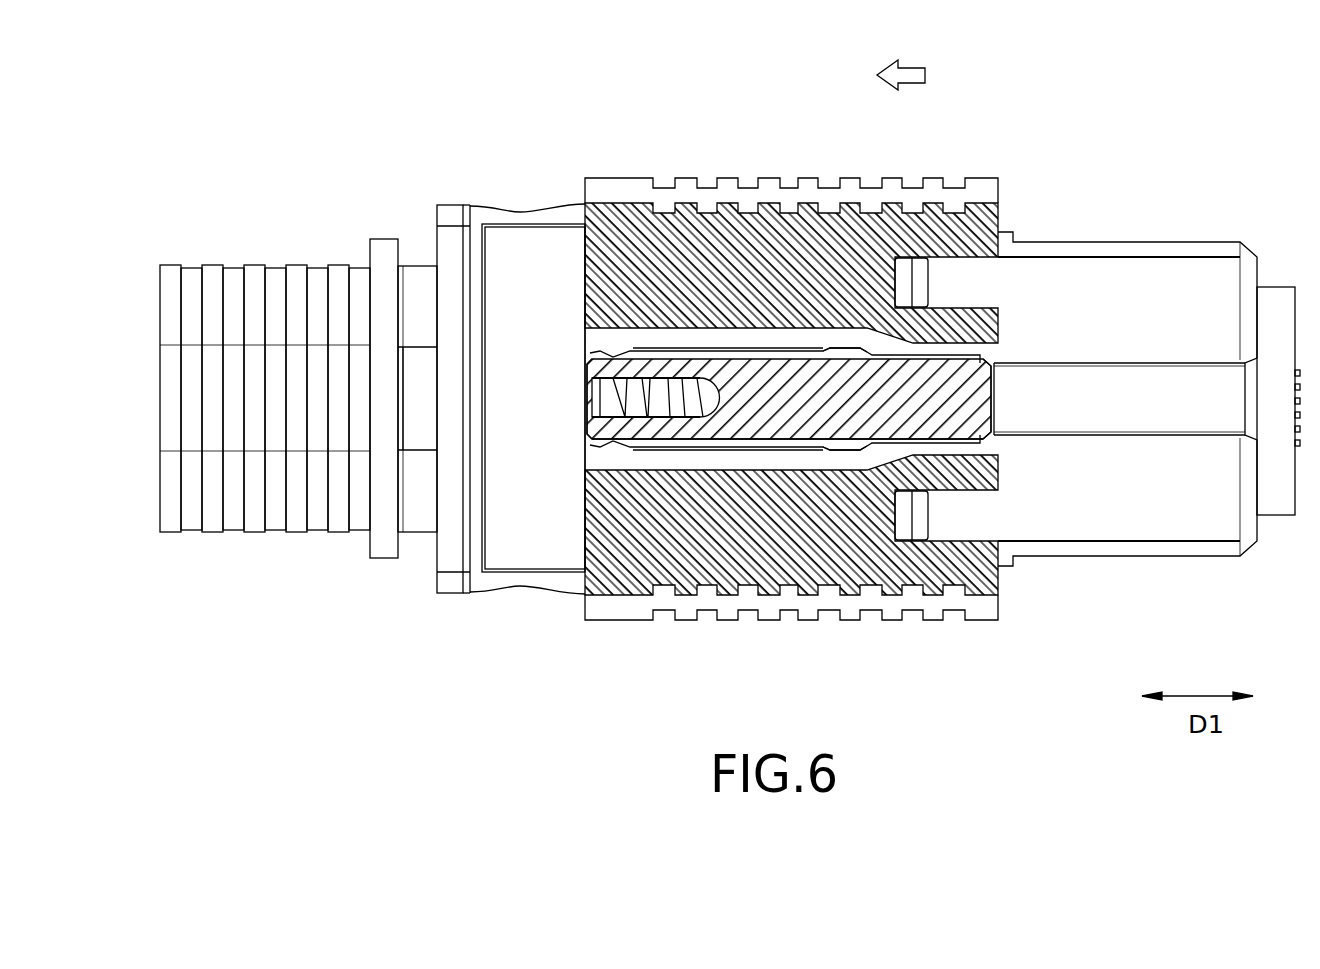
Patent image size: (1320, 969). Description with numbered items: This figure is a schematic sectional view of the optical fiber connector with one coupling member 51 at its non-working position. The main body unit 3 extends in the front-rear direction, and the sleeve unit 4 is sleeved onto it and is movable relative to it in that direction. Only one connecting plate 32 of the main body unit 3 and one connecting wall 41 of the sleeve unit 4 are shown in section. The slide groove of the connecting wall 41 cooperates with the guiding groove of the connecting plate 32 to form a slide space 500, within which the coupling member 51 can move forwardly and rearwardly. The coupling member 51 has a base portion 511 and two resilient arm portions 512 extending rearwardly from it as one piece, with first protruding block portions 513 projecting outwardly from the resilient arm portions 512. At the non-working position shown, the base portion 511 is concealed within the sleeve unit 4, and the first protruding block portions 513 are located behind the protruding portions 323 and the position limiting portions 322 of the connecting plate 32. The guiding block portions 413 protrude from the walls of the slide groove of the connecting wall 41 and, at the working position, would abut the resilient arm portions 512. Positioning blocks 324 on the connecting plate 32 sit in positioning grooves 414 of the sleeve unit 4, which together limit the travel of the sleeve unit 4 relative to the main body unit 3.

The main body unit 3 is at (310, 182).
The sleeve unit 4 is at (763, 152).
The connecting wall 41 is at (735, 225).
The guiding block portion 413 is at (937, 351).
The positioning groove 414 is at (977, 280).
The connecting plate 32 is at (727, 462).
The position limiting portion 322 is at (829, 355).
The protruding portion 323 is at (592, 415).
The positioning block 324 is at (918, 283).
The slide space 500 is at (770, 441).
The coupling member 51 is at (1010, 397).
The base portion 511 is at (985, 414).
The resilient arm portion 512 is at (668, 367).
The first protruding block portion 513 is at (590, 356).